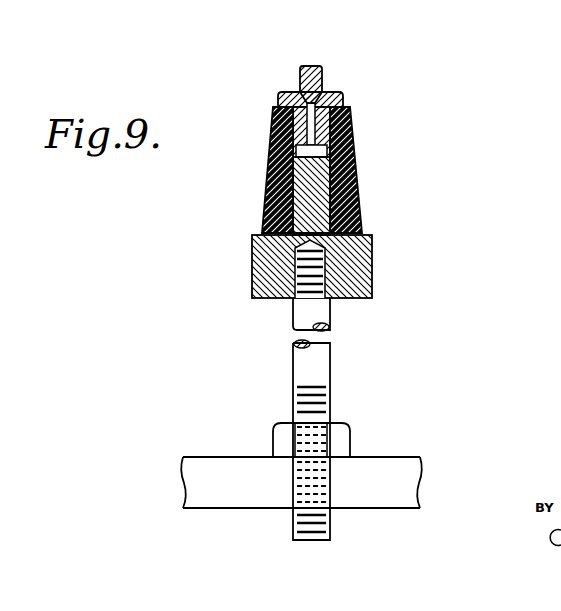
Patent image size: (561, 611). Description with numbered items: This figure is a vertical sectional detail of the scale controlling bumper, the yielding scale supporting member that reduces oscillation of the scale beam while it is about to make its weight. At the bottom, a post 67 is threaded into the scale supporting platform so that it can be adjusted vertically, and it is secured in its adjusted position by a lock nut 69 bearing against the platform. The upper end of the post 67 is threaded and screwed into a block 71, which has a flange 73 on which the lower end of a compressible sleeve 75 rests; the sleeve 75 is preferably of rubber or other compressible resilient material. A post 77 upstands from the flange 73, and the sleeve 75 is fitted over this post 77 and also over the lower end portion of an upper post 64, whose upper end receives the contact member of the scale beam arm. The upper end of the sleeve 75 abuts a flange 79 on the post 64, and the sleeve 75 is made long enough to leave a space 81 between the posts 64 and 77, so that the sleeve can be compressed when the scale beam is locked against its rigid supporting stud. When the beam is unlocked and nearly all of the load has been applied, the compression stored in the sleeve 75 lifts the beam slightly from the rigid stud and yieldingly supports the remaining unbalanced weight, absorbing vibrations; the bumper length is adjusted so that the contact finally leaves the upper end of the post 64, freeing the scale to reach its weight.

The post 64 is at (318, 82).
The space 81 is at (343, 100).
The flange 79 is at (340, 102).
The compressible sleeve 75 is at (357, 188).
The flange 73 is at (362, 232).
The block 71 is at (372, 262).
The post 77 is at (313, 190).
The post 67 is at (322, 368).
The lock nut 69 is at (350, 427).